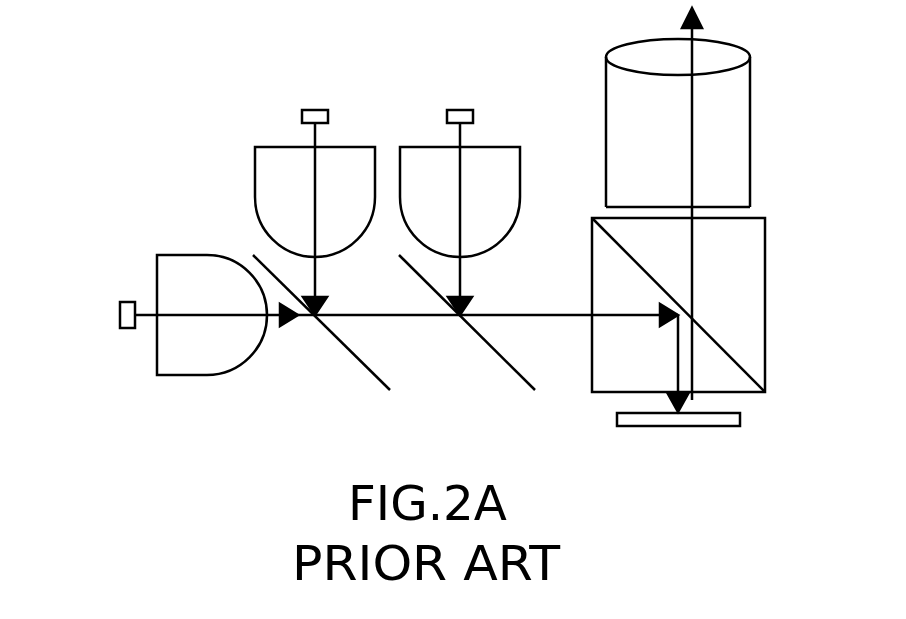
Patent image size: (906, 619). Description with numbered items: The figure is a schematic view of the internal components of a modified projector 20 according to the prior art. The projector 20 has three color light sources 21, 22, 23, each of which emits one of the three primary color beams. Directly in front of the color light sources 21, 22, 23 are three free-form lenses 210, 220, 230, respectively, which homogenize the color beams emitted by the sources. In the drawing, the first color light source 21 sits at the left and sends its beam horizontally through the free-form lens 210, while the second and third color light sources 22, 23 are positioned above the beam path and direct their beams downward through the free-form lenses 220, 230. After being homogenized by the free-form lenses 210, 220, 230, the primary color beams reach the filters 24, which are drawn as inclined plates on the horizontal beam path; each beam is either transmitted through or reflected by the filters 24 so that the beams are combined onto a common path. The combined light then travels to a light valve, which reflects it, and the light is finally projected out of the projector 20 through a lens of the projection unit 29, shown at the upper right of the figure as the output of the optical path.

The projector 20 is at (483, 38).
The color light source 21 is at (128, 310).
The free-form lens 210 is at (190, 268).
The color light source 22 is at (310, 115).
The free-form lens 220 is at (265, 193).
The color light source 23 is at (463, 115).
The free-form lens 230 is at (502, 197).
The filters 24 is at (498, 366).
The projection unit 29 is at (732, 128).